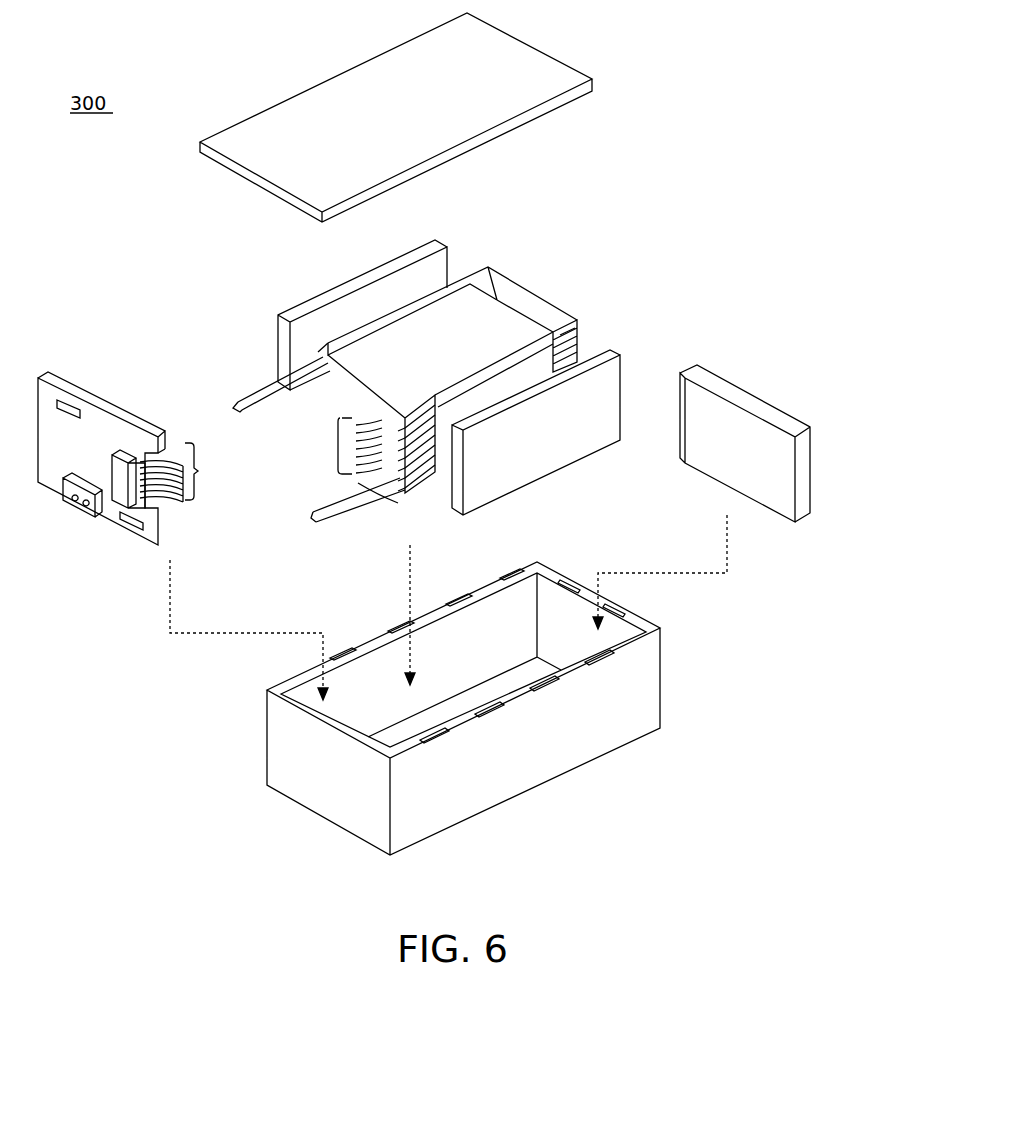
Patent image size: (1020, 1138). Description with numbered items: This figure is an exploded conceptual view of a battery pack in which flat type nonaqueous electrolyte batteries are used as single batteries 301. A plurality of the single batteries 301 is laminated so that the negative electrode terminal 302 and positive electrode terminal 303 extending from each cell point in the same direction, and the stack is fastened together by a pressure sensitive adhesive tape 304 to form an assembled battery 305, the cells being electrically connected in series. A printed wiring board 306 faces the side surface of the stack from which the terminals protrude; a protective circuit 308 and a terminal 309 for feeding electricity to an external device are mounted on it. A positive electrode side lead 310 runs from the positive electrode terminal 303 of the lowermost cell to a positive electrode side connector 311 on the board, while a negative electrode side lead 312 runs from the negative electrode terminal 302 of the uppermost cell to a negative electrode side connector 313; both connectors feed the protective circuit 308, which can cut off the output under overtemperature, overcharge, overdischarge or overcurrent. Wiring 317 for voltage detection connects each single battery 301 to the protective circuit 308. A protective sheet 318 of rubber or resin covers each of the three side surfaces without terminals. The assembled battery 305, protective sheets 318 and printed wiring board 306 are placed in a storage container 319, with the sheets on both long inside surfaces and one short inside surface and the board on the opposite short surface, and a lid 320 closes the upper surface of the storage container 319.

The single battery 301 is at (578, 356).
The negative electrode terminal 302 is at (322, 352).
The positive electrode terminal 303 is at (557, 314).
The pressure sensitive adhesive tape 304 is at (520, 313).
The assembled battery 305 is at (404, 299).
The printed wiring board 306 is at (133, 440).
The protective circuit 308 is at (122, 450).
The terminal for feeding electricity to an external device 309 is at (85, 502).
The positive electrode side lead 310 is at (343, 505).
The positive electrode side connector 311 is at (140, 528).
The negative electrode side lead 312 is at (247, 397).
The negative electrode side connector 313 is at (75, 408).
The wiring for voltage detection 317 is at (340, 460).
The protective sheet 318 is at (330, 295).
The storage container 319 is at (652, 681).
The lid 320 is at (543, 67).